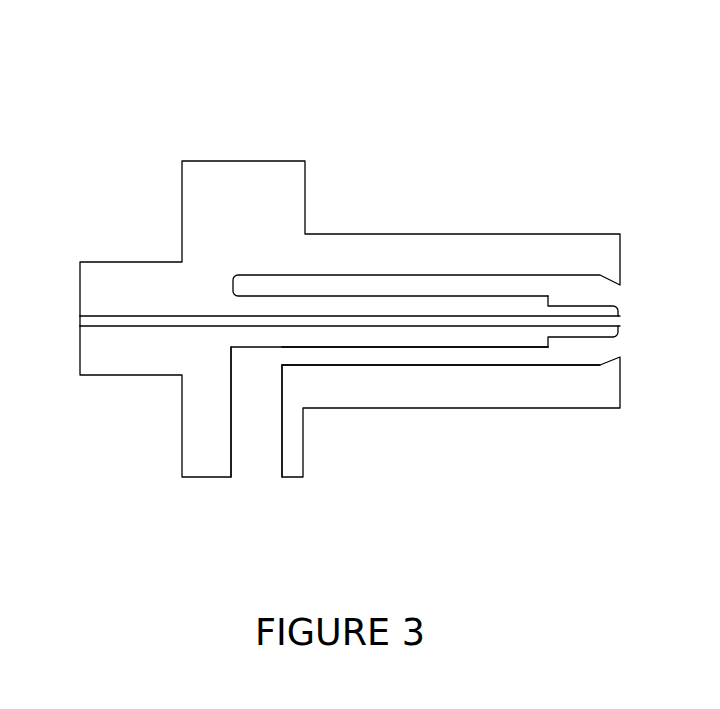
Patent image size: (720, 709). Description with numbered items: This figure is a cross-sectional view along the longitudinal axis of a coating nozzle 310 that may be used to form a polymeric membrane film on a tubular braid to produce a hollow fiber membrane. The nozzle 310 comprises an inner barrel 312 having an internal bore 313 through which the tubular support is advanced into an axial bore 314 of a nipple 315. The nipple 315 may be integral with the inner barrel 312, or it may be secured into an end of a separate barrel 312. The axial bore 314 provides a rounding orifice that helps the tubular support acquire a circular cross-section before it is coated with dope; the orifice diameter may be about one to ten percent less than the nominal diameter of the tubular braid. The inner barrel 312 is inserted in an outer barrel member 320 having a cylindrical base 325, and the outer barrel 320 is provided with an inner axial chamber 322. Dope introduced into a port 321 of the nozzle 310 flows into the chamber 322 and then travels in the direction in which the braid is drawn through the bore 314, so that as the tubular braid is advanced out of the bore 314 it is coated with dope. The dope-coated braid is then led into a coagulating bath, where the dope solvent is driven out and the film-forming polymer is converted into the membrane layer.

The coating nozzle 310 is at (587, 108).
The inner barrel 312 is at (398, 298).
The internal bore 313 is at (80, 317).
The axial bore 314 is at (611, 308).
The nipple 315 is at (611, 336).
The outer barrel member 320 is at (443, 393).
The port 321 is at (260, 466).
The inner axial chamber 322 is at (506, 355).
The cylindrical base 325 is at (283, 181).